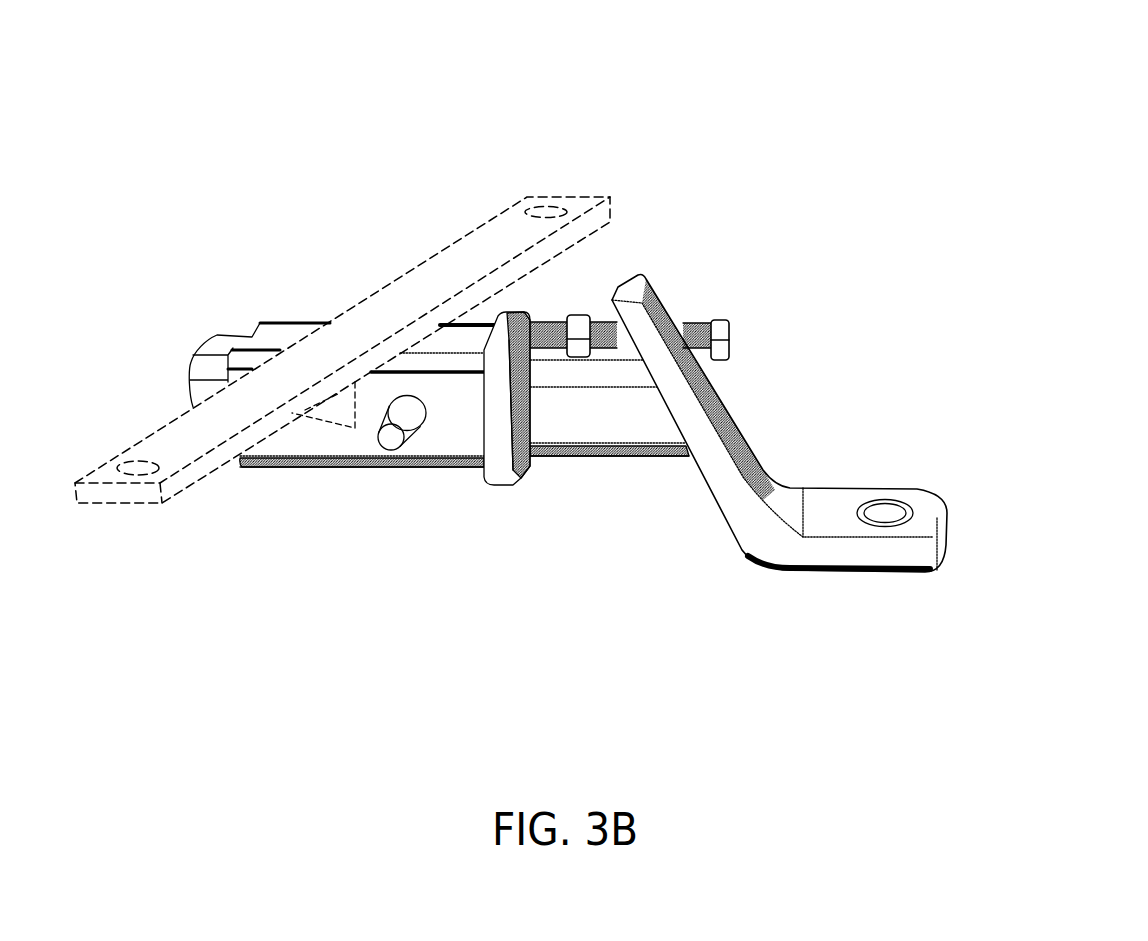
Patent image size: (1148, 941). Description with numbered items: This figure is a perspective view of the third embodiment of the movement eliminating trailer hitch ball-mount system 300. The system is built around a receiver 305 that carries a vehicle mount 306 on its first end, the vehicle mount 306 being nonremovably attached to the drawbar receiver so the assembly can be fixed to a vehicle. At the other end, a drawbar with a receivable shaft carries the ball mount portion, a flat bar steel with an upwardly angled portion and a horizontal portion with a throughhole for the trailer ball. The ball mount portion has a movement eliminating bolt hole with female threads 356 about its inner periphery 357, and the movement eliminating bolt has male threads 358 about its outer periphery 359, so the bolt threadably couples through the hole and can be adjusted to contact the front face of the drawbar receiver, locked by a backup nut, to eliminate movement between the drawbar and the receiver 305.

The movement eliminating trailer hitch ball-mount system 300 is at (704, 90).
The receiver 305 is at (340, 481).
The vehicle mount 306 is at (486, 242).
The female threads 356 is at (666, 327).
The inner periphery 357 is at (683, 350).
The male threads 358 is at (547, 322).
The outer periphery 359 is at (698, 325).